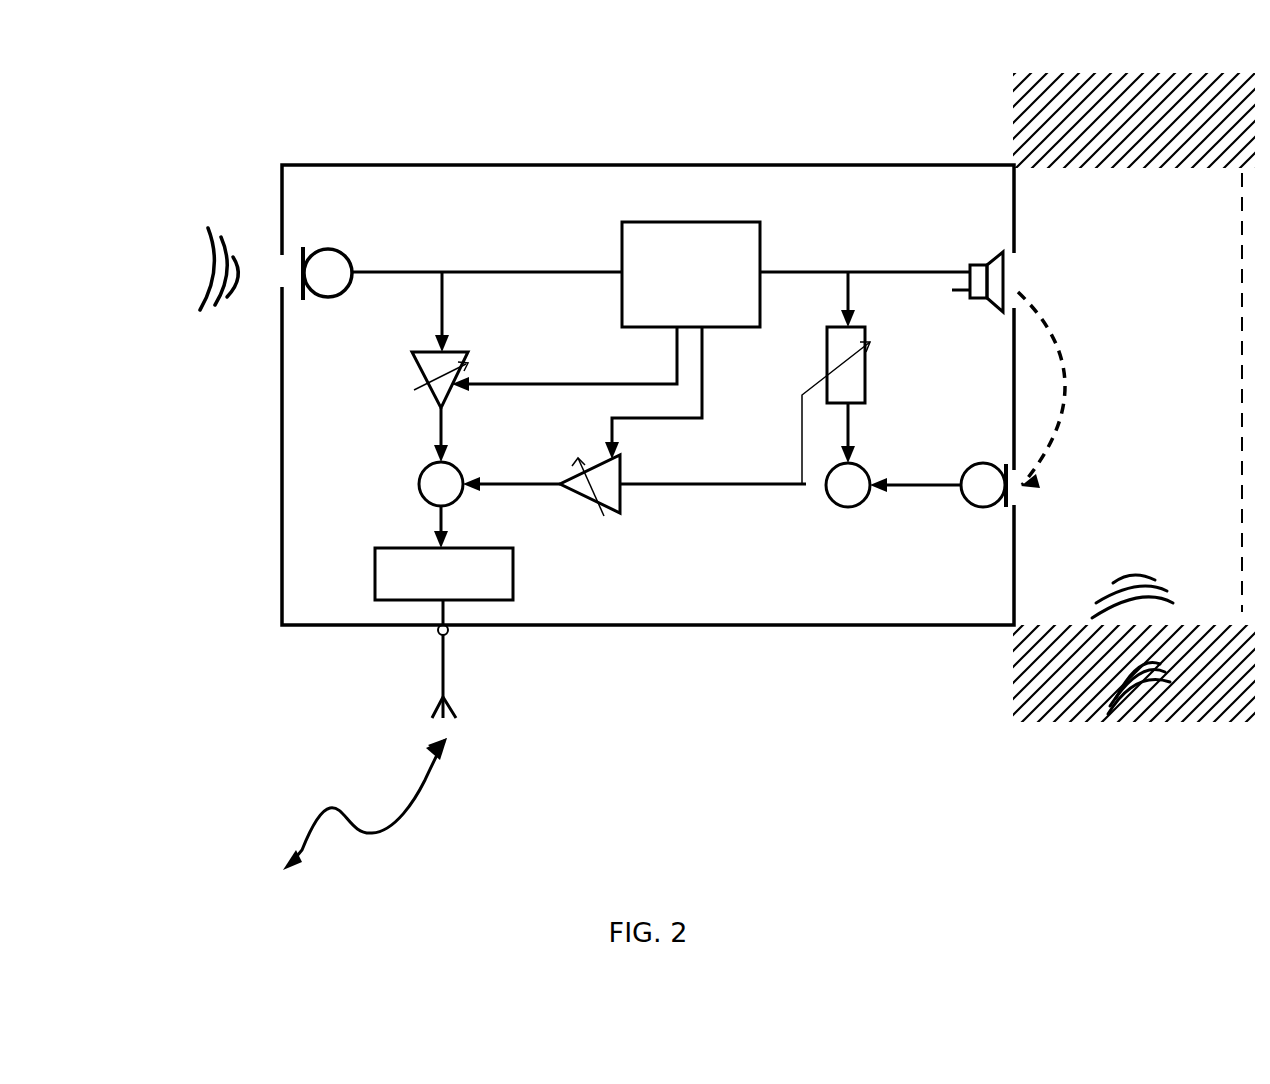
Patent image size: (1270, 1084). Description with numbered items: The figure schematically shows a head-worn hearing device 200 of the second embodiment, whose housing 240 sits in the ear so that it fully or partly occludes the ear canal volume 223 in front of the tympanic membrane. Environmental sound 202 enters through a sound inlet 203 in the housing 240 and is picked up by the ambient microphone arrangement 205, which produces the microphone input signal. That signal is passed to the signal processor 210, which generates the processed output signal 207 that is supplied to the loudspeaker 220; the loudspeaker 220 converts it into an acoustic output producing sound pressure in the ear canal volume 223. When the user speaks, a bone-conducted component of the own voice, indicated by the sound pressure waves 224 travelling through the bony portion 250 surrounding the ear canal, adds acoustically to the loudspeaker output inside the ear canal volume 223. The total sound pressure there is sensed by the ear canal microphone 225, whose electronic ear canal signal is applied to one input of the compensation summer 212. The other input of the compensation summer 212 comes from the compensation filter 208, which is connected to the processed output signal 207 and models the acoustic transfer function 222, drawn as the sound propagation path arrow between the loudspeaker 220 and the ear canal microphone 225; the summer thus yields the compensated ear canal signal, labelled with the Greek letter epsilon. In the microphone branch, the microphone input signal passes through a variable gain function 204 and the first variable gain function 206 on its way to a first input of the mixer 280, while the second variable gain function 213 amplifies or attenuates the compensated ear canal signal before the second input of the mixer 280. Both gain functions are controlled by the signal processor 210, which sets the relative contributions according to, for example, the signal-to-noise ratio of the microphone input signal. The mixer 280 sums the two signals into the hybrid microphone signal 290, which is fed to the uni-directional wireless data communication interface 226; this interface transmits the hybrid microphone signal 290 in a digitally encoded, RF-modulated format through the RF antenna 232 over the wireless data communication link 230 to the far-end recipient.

The head-worn hearing device 200 is at (687, 517).
The environmental sound 202 is at (185, 290).
The sound inlet 203 is at (232, 226).
The variable gain function 204 is at (402, 380).
The ambient microphone arrangement 205 is at (347, 254).
The first variable gain function 206 is at (922, 467).
The processed output signal 207 is at (811, 249).
The compensation filter 208 is at (812, 406).
The signal processor 210 is at (675, 292).
The compensation summer 212 is at (830, 494).
The second variable gain function 213 is at (573, 493).
The loudspeaker 220 is at (951, 294).
The acoustic transfer function 222 is at (1075, 378).
The ear canal volume 223 is at (1156, 379).
The bone conducted sound pressure waves 224 is at (1162, 629).
The ear canal microphone 225 is at (960, 501).
The wireless data communication interface 226 is at (771, 392).
The wireless data communication link 230 is at (365, 804).
The RF antenna 232 is at (403, 659).
The housing 240 is at (648, 420).
The bony portion 250 is at (1096, 407).
The mixer 280 is at (402, 478).
The hybrid microphone signal 290 is at (398, 515).